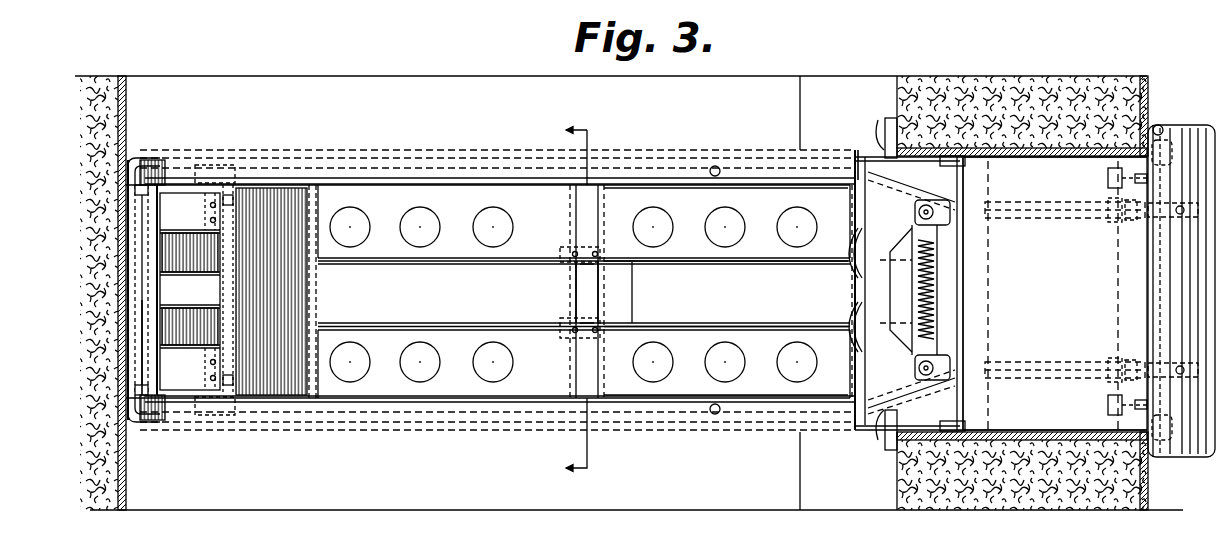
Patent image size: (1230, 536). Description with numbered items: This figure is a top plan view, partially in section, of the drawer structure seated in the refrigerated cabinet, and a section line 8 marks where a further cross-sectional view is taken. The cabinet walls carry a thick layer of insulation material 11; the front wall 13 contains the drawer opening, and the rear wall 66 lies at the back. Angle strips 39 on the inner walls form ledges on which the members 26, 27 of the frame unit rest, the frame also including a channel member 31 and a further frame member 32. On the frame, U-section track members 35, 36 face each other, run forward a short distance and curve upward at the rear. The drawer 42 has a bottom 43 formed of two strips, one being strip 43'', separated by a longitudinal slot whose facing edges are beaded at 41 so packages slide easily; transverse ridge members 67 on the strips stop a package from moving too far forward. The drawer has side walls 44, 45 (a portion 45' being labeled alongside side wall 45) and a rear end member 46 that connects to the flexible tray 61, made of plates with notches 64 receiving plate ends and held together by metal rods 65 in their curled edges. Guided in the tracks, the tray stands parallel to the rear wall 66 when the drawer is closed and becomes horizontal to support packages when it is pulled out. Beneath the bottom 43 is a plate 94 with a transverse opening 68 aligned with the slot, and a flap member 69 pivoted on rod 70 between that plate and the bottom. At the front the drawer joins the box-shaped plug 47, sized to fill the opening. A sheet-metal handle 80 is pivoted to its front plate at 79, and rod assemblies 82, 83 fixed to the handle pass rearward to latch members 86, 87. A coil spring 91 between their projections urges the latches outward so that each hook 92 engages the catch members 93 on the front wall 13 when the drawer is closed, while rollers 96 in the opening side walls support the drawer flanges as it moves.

The section line 8 is at (586, 300).
The insulation material 11 is at (83, 82).
The front wall 13 is at (972, 140).
The frame unit member 26 is at (186, 425).
The frame unit member 27 is at (195, 170).
The channel member 31 is at (582, 381).
The upper perforated plate 32 is at (582, 212).
The track member 35 is at (128, 401).
The track member 36 is at (128, 171).
The angle strips 39 is at (236, 105).
The bead 41 is at (418, 264).
The drawer 42 is at (470, 200).
The bottom 43 is at (584, 311).
The bottom strip 43'' is at (726, 261).
The side wall 44 is at (686, 401).
The side wall 45 is at (726, 195).
The plate 45' is at (726, 321).
The rear end member 46 is at (302, 385).
The box-shaped structure 47 is at (1050, 150).
The tray 61 is at (190, 390).
The notches 64 is at (266, 212).
The metal rods 65 is at (128, 362).
The rear wall 66 is at (126, 121).
The transverse ridge members 67 is at (848, 330).
The transverse opening 68 is at (596, 301).
The flap member 69 is at (596, 276).
The rod 70 is at (574, 306).
The pivot 79 is at (1170, 460).
The handle 80 is at (1210, 299).
The rod assembly 82 is at (1052, 362).
The rod assembly 83 is at (1070, 218).
The latch member 86 is at (910, 401).
The latch member 87 is at (858, 165).
The coil spring 91 is at (936, 254).
The hook 92 is at (882, 150).
The catch members 93 is at (965, 163).
The plate 94 is at (570, 260).
The rollers 96 is at (895, 130).